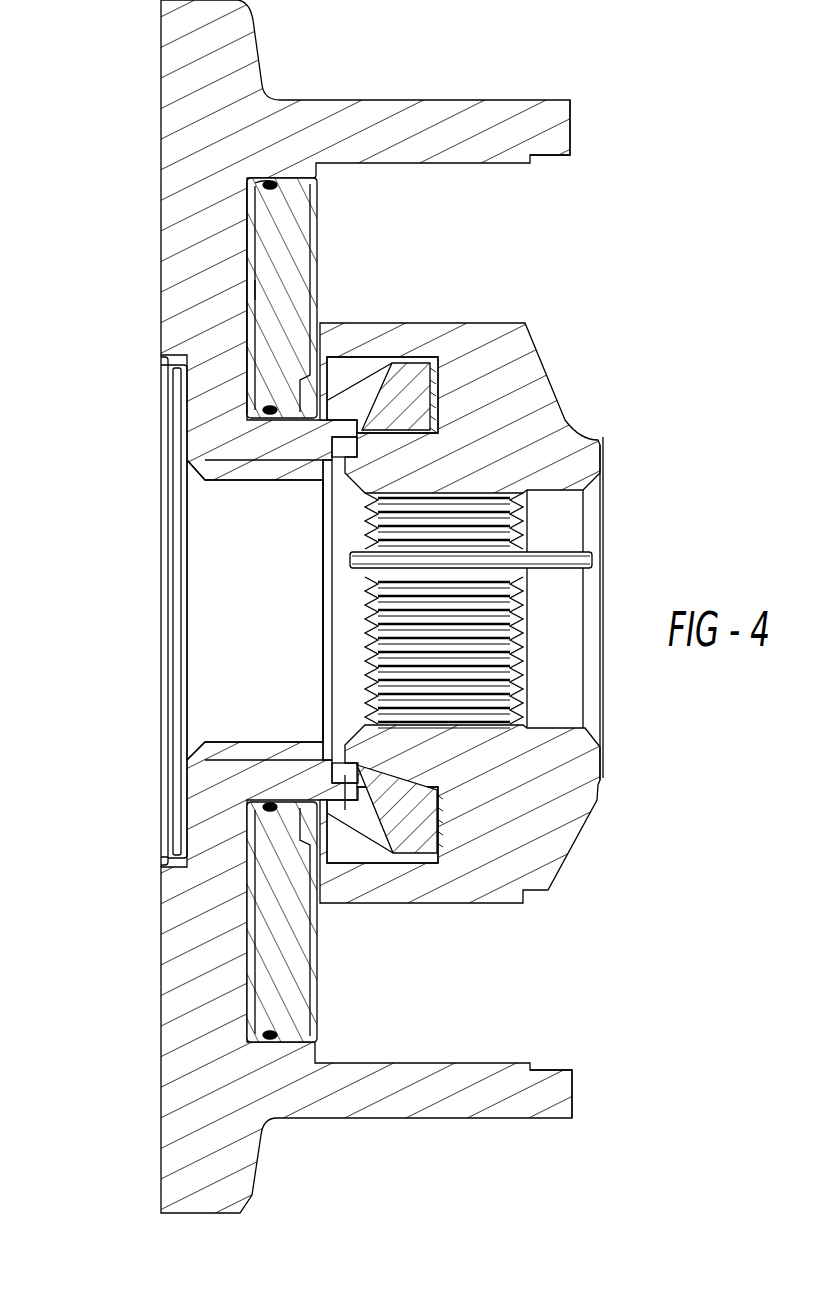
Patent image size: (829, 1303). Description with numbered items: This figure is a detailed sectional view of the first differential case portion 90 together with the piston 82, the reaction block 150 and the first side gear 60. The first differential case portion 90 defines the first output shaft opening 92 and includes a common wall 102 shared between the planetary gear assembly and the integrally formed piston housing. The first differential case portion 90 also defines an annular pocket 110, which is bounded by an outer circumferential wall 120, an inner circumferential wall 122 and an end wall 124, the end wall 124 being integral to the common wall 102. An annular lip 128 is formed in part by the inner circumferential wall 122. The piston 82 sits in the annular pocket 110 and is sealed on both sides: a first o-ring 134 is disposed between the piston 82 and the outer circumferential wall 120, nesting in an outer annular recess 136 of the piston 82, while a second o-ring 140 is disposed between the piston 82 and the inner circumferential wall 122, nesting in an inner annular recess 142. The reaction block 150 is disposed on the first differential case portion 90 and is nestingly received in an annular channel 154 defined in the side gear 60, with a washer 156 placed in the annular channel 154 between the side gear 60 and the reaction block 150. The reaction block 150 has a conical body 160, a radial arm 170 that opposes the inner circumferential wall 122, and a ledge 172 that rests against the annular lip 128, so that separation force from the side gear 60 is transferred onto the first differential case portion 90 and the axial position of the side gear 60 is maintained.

The first side gear 60 is at (537, 397).
The piston 82 is at (287, 243).
The first differential case portion 90 is at (207, 40).
The first output shaft opening 92 is at (253, 623).
The common wall 102 is at (207, 937).
The annular pocket 110 is at (258, 288).
The outer circumferential wall 120 is at (293, 182).
The inner circumferential wall 122 is at (272, 407).
The end wall 124 is at (250, 268).
The annular lip 128 is at (360, 435).
The first o-ring 134 is at (277, 180).
The outer annular recess 136 is at (267, 180).
The second o-ring 140 is at (287, 407).
The inner annular recess 142 is at (268, 415).
The reaction block 150 is at (397, 397).
The annular channel 154 is at (371, 857).
The washer 156 is at (440, 378).
The conical body 160 is at (413, 805).
The radial arm 170 is at (345, 808).
The ledge 172 is at (352, 782).